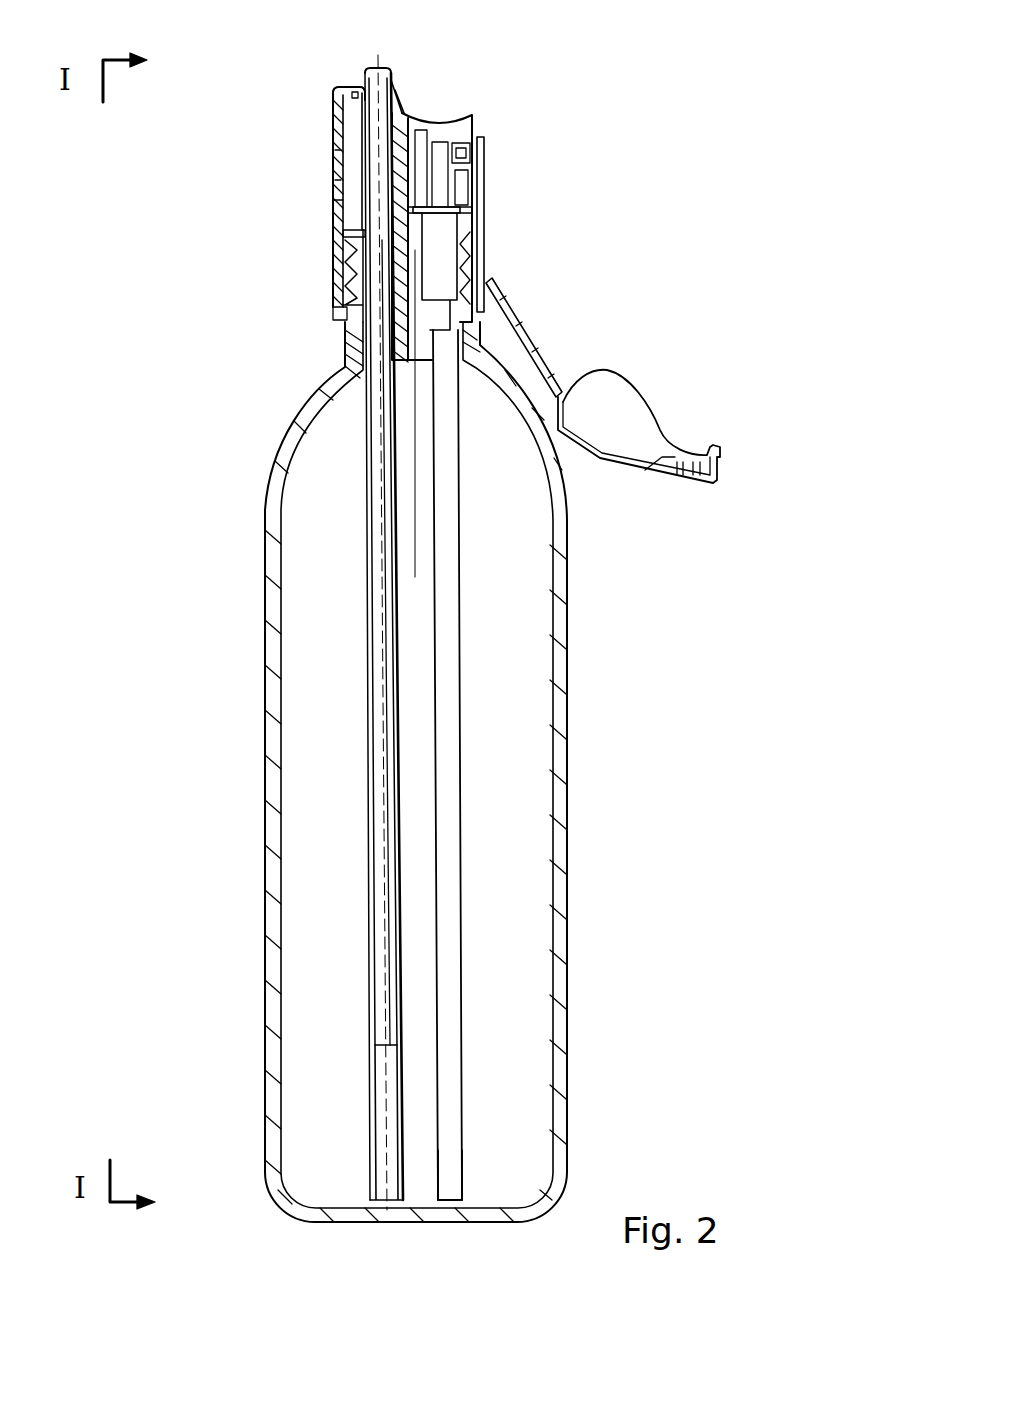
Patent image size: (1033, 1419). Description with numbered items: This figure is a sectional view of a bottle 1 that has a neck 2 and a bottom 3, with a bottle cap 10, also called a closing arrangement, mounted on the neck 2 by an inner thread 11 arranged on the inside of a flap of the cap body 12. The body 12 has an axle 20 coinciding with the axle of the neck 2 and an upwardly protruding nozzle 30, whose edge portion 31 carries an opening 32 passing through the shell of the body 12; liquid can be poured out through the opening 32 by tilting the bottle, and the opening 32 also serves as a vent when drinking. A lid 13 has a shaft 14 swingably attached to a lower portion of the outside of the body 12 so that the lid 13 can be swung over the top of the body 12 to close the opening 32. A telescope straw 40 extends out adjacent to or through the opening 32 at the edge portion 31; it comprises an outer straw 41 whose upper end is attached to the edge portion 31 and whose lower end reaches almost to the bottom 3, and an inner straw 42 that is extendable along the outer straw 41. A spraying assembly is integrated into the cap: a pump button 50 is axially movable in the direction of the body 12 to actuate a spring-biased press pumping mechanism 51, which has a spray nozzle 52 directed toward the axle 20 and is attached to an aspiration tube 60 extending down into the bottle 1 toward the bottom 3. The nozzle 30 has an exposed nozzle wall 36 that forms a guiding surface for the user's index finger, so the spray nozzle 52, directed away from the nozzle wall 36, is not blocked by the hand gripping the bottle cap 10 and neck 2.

The bottle 1 is at (264, 502).
The neck 2 is at (347, 350).
The bottom 3 is at (313, 1207).
The bottle cap 10 is at (332, 208).
The inner thread 11 is at (338, 290).
The body 12 is at (325, 185).
The lid 13 is at (623, 408).
The shaft 14 is at (550, 367).
The axle 20 is at (418, 452).
The nozzle 30 is at (330, 140).
The edge portion 31 is at (335, 78).
The opening 32 is at (356, 88).
The nozzle wall 36 is at (402, 112).
The telescope straw 40 is at (390, 78).
The outer straw 41 is at (408, 1080).
The inner straw 42 is at (400, 748).
The pump button 50 is at (470, 118).
The press pumping mechanism 51 is at (447, 272).
The spray nozzle 52 is at (487, 148).
The aspiration tube 60 is at (462, 1160).